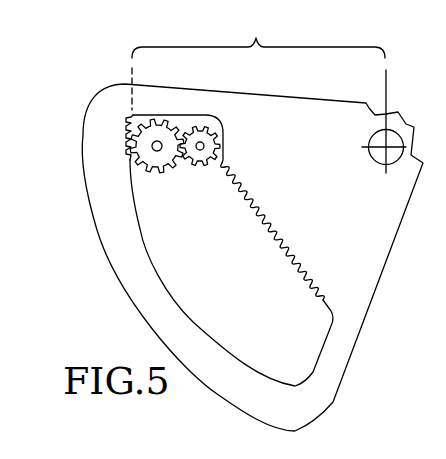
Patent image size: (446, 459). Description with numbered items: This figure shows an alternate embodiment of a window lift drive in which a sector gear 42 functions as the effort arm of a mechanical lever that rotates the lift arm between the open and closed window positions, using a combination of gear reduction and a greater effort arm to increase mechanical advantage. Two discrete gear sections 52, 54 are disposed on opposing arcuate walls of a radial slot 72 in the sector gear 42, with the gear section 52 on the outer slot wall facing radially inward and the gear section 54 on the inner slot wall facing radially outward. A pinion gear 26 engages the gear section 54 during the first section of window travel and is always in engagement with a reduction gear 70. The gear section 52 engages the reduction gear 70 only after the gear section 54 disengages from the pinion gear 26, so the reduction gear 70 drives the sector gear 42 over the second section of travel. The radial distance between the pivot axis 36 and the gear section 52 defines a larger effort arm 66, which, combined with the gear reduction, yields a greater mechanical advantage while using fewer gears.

The pinion gear 26 is at (200, 127).
The pivot axis 36 is at (370, 153).
The sector gear 42 is at (346, 342).
The gear section 52 is at (130, 125).
The gear section 54 is at (252, 248).
The effort arm 66 is at (258, 61).
The reduction gear 70 is at (156, 158).
The radial slot 72 is at (241, 321).